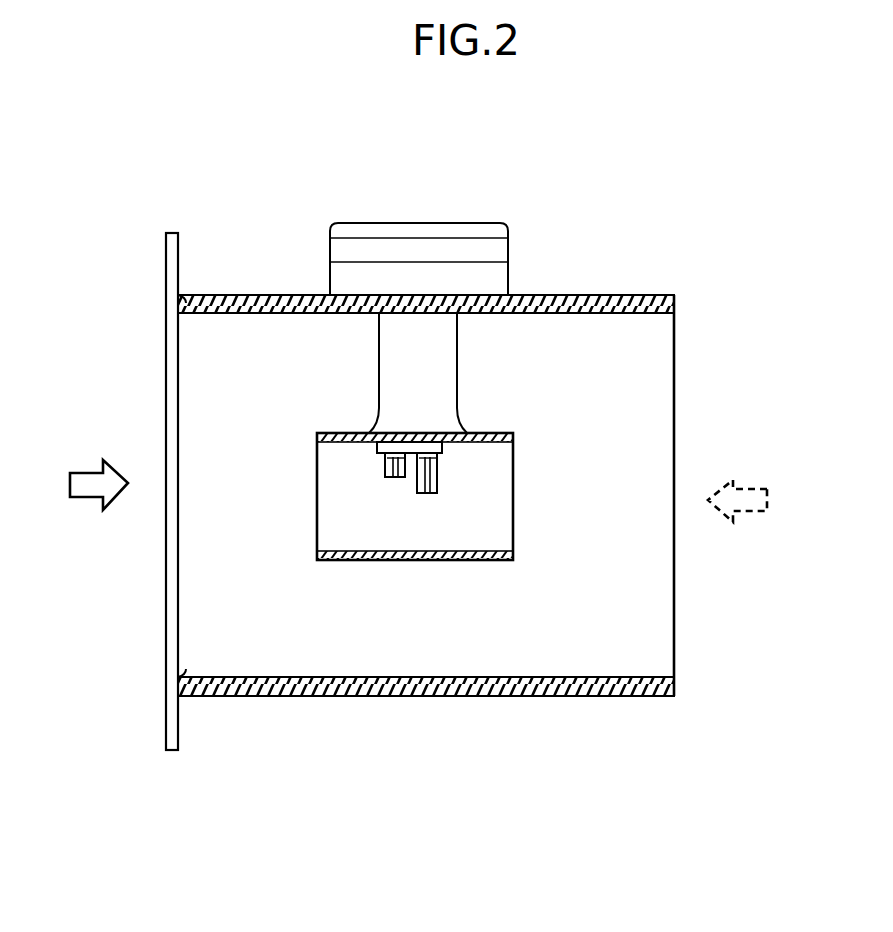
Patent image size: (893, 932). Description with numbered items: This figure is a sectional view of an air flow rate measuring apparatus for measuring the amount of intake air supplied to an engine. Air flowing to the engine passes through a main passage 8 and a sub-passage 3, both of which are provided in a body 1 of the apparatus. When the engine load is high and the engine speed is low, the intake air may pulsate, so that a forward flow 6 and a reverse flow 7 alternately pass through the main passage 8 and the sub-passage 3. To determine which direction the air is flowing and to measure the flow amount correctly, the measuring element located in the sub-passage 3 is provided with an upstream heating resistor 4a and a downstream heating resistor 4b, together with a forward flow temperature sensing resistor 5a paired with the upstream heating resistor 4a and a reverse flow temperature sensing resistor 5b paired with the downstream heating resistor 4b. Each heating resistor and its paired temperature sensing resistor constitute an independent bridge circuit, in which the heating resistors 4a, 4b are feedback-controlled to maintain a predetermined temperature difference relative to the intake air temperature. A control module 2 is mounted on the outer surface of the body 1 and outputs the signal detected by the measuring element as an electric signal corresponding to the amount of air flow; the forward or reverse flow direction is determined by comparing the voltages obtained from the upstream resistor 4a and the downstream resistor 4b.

The body 1 is at (585, 296).
The control module 2 is at (435, 250).
The sub-passage 3 is at (495, 452).
The upstream heating resistor 4a is at (423, 496).
The downstream heating resistor 4b is at (432, 487).
The forward flow temperature sensing resistor 5a is at (392, 468).
The reverse flow temperature sensing resistor 5b is at (403, 480).
The forward flow 6 is at (92, 488).
The reverse flow 7 is at (742, 512).
The main passage 8 is at (662, 363).